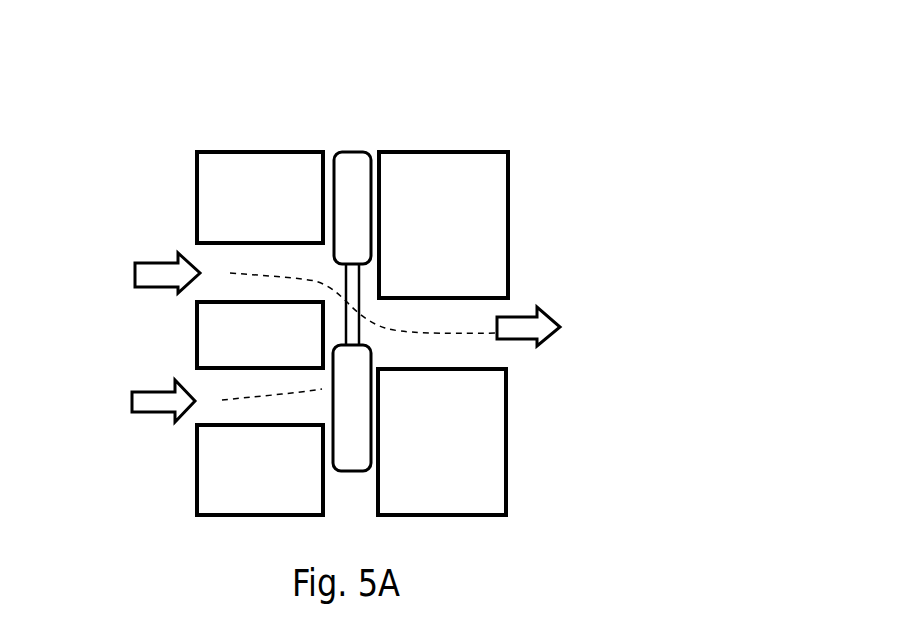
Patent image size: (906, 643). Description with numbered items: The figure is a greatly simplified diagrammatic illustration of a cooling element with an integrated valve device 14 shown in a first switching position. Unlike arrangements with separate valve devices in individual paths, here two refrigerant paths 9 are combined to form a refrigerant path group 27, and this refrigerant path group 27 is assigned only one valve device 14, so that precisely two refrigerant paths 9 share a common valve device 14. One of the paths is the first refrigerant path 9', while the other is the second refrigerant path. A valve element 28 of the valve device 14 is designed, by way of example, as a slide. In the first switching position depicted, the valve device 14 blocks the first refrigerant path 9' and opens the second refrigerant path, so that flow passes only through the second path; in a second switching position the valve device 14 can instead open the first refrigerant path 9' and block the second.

The valve device 14 is at (517, 110).
The refrigerant path group 27 is at (130, 228).
The valve element 28 is at (356, 151).
The refrigerant path 9 is at (358, 269).
The first refrigerant path 9' is at (272, 437).